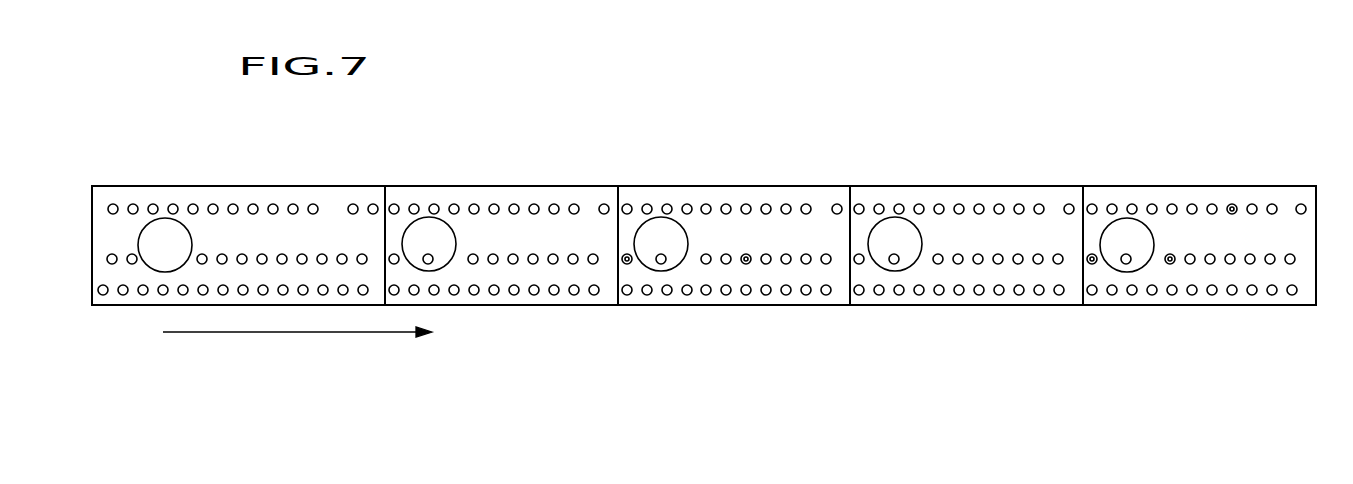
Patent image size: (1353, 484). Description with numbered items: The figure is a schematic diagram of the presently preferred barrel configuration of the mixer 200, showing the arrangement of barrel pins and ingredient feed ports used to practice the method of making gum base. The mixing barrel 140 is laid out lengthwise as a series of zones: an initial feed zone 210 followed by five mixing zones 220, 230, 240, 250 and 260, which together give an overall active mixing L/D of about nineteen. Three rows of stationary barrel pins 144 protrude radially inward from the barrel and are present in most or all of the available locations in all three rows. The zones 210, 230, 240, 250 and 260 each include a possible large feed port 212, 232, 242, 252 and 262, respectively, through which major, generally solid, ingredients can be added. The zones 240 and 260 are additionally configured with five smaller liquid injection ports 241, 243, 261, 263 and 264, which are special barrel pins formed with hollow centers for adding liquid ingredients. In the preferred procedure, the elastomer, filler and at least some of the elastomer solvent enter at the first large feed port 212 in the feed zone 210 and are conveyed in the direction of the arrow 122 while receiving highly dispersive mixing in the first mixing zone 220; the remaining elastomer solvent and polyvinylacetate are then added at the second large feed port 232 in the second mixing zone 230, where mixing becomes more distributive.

The mixer 200 is at (1233, 185).
The mixing barrel 140 is at (818, 205).
The barrel pins 144 is at (765, 203).
The arrow 122 is at (285, 333).
The initial feed zone 210 is at (122, 185).
The first large feed port 212 is at (170, 242).
The first mixing zone 220 is at (287, 185).
The second mixing zone 230 is at (480, 185).
The second large feed port 232 is at (440, 240).
The mixing zone 240 is at (640, 185).
The liquid injection port 241 is at (627, 253).
The large feed port 242 is at (668, 241).
The liquid injection port 243 is at (765, 253).
The mixing zone 250 is at (982, 185).
The large feed port 252 is at (903, 241).
The mixing zone 260 is at (1120, 185).
The liquid injection port 261 is at (1092, 253).
The large feed port 262 is at (1130, 243).
The liquid injection port 263 is at (1170, 264).
The liquid injection port 264 is at (1231, 214).